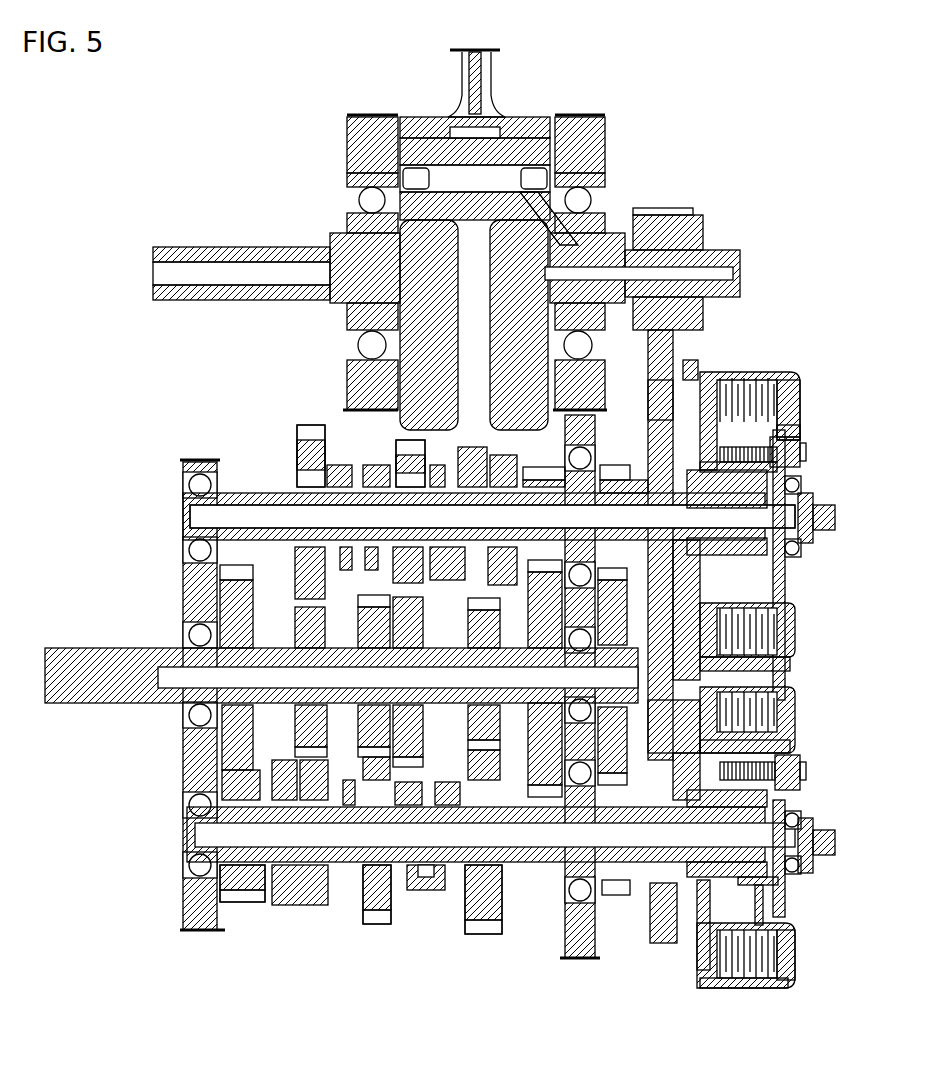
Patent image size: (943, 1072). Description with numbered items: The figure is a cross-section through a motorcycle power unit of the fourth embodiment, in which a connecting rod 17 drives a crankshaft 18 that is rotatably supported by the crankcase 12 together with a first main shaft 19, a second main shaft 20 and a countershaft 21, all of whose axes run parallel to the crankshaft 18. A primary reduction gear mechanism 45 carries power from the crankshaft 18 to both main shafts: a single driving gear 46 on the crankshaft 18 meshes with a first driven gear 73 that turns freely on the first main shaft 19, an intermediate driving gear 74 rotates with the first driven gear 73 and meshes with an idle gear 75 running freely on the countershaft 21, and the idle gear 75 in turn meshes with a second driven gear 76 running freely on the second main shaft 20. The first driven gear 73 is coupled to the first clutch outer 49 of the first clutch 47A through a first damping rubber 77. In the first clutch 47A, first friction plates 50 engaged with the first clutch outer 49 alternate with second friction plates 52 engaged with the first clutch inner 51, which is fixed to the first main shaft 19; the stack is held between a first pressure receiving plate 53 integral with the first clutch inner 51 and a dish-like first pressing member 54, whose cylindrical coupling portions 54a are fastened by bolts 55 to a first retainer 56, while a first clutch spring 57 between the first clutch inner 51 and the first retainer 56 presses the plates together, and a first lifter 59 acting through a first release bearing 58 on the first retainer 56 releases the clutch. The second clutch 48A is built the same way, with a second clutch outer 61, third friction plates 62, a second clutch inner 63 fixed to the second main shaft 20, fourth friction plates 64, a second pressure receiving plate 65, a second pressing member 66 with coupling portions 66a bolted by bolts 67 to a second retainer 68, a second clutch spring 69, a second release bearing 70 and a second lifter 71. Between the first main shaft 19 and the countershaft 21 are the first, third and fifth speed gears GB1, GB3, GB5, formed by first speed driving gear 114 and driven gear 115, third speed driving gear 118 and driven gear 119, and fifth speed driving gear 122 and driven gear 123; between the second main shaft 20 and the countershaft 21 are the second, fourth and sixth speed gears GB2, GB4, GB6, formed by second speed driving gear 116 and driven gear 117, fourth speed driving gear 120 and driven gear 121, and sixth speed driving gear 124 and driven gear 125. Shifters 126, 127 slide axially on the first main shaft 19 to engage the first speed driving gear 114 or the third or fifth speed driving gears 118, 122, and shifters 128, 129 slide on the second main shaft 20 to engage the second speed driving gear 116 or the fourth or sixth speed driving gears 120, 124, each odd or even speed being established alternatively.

The crankcase 12 is at (352, 152).
The connecting rod 17 is at (487, 84).
The crankshaft 18 is at (720, 255).
The first main shaft 19 is at (243, 493).
The second main shaft 20 is at (190, 822).
The countershaft 21 is at (118, 655).
The primary reduction gear mechanism 45 is at (638, 207).
The driving gear 46 is at (660, 215).
The first clutch 47A is at (772, 365).
The second clutch 48A is at (683, 987).
The first clutch outer 49 is at (780, 372).
The first friction plates 50 is at (730, 378).
The first clutch inner 51 is at (762, 598).
The second friction plates 52 is at (774, 618).
The first pressure receiving plate 53 is at (785, 652).
The first pressing member 54 is at (717, 380).
The cylindrical coupling portions 54a is at (783, 430).
The bolts 55 is at (806, 449).
The first retainer 56 is at (798, 590).
The first clutch spring 57 is at (787, 432).
The first release bearing 58 is at (801, 482).
The first lifter 59 is at (820, 536).
The second clutch outer 61 is at (700, 990).
The third friction plates 62 is at (750, 694).
The second clutch inner 63 is at (780, 905).
The fourth friction plates 64 is at (755, 988).
The second pressure receiving plate 65 is at (786, 982).
The second pressing member 66 is at (697, 948).
The cylindrical coupling portions 66a is at (777, 745).
The bolts 67 is at (806, 770).
The second retainer 68 is at (786, 897).
The second clutch spring 69 is at (800, 812).
The second release bearing 70 is at (801, 867).
The second lifter 71 is at (826, 843).
The first driven gear 73 is at (690, 360).
The intermediate driving gear 74 is at (617, 465).
The idle gear 75 is at (492, 517).
The second driven gear 76 is at (615, 896).
The first damping rubber 77 is at (660, 360).
The first speed driving gear 114 is at (542, 466).
The first speed driven gear 115 is at (544, 798).
The second speed driving gear 116 is at (235, 902).
The second speed driven gear 117 is at (220, 572).
The third speed driving gear 118 is at (412, 455).
The third speed driven gear 119 is at (412, 750).
The fourth speed driving gear 120 is at (370, 912).
The fourth speed driven gear 121 is at (366, 615).
The fifth speed driving gear 122 is at (303, 440).
The fifth speed driven gear 123 is at (262, 615).
The sixth speed driving gear 124 is at (465, 932).
The sixth speed driven gear 125 is at (475, 625).
The shifter 126 is at (485, 455).
The shifter 127 is at (368, 468).
The shifter 128 is at (302, 907).
The shifter 129 is at (425, 892).
The first speed gear GB1 is at (658, 410).
The second speed gear GB2 is at (245, 908).
The third speed gear GB3 is at (393, 437).
The fourth speed gear GB4 is at (378, 925).
The fifth speed gear GB5 is at (290, 426).
The sixth speed gear GB6 is at (485, 937).